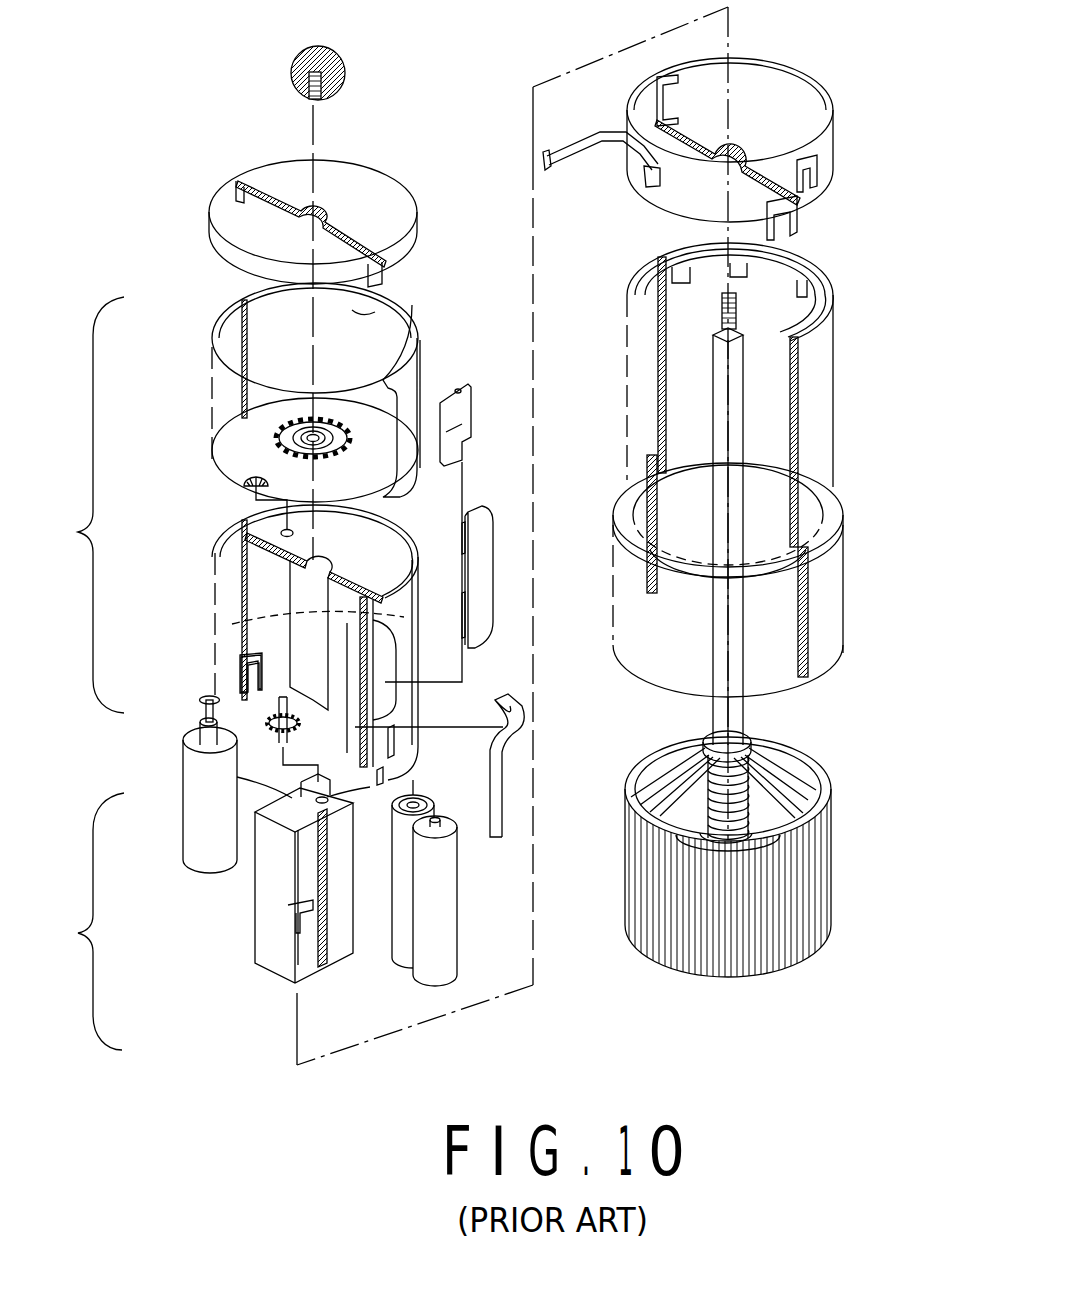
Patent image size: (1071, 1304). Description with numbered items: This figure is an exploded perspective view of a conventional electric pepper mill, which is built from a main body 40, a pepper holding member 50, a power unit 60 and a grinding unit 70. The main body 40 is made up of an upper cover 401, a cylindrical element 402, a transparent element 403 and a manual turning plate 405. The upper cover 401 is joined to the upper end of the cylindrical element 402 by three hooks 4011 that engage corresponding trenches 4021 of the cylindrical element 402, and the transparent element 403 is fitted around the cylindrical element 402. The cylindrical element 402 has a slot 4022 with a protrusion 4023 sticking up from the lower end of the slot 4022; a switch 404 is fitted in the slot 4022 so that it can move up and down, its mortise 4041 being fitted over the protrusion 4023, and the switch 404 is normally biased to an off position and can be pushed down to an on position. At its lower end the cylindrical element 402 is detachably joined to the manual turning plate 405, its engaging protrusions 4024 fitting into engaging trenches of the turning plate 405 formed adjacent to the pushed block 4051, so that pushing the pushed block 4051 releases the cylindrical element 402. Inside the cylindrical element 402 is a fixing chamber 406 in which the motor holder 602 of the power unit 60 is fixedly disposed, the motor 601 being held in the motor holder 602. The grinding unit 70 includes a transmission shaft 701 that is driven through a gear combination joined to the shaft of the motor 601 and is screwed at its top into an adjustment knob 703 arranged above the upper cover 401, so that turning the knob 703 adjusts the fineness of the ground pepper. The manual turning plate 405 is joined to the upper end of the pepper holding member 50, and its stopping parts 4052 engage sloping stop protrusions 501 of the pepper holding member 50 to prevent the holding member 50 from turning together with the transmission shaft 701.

The adjustment knob 703 is at (342, 62).
The upper cover 401 is at (352, 184).
The hooks 4011 is at (362, 314).
The transparent element 403 is at (393, 384).
The trenches 4021 is at (345, 487).
The switch 404 is at (478, 556).
The mortise 4041 is at (467, 625).
The cylindrical element 402 is at (220, 597).
The fixing chamber 406 is at (240, 645).
The slot 4022 is at (388, 657).
The protrusion 4023 is at (413, 690).
The engaging protrusions 4024 is at (395, 755).
The main body 40 is at (78, 505).
The power unit 60 is at (242, 915).
The motor 601 is at (207, 793).
The motor holder 602 is at (330, 935).
The manual turning plate 405 is at (830, 157).
The pushed block 4051 is at (825, 112).
The stopping parts 4052 is at (783, 213).
The pepper holding member 50 is at (760, 373).
The sloping stop protrusions 501 is at (813, 293).
The transmission shaft 701 is at (800, 627).
The grinding unit 70 is at (793, 735).